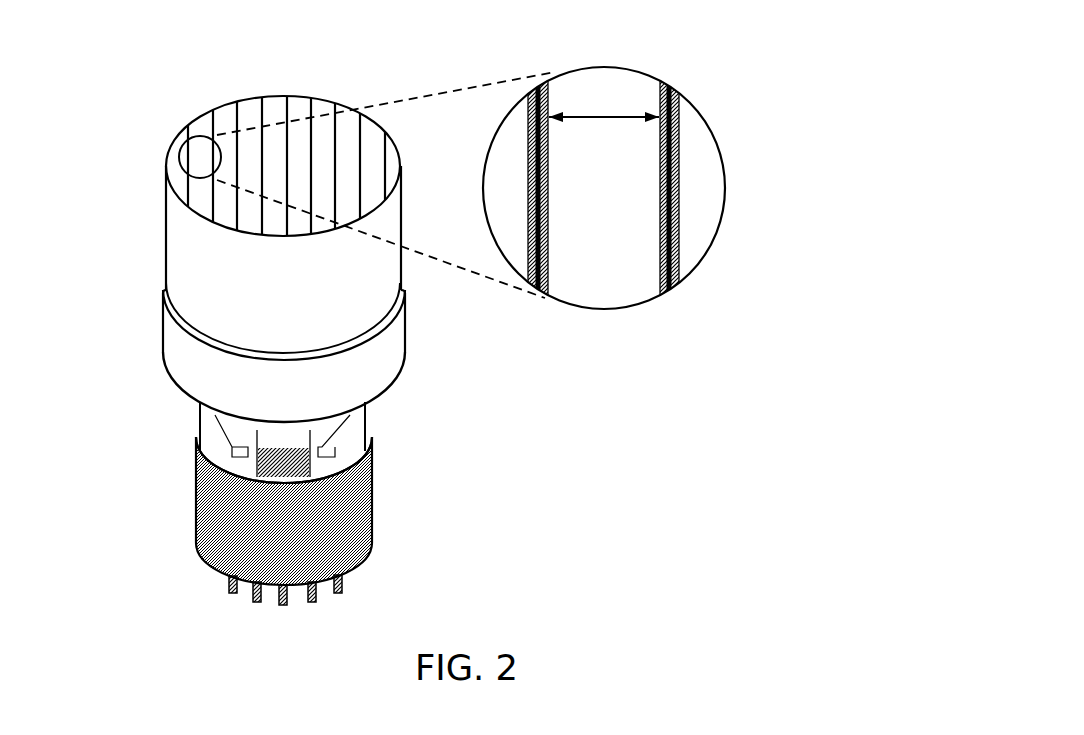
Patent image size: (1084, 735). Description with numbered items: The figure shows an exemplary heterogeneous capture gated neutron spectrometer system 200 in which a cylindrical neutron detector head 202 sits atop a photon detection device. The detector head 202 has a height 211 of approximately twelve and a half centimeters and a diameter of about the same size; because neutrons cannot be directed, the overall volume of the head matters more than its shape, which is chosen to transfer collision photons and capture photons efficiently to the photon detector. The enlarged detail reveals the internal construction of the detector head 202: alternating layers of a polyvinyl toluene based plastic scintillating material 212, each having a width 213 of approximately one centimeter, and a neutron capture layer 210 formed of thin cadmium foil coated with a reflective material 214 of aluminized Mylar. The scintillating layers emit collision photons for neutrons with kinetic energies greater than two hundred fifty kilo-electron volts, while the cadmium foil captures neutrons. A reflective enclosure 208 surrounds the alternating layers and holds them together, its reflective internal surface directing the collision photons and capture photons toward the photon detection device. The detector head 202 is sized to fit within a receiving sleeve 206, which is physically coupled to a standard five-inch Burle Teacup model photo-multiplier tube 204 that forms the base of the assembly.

The heterogeneous capture gated neutron spectrometer system 200 is at (178, 112).
The neutron detector head 202 is at (332, 93).
The photo-multiplier tube 204 is at (158, 282).
The receiving sleeve 206 is at (363, 385).
The reflective enclosure 208 is at (353, 318).
The neutron capture layer 210 is at (669, 161).
The height 211 is at (158, 98).
The plastic scintillating material 212 is at (621, 265).
The width 213 is at (600, 117).
The reflective material 214 is at (680, 290).